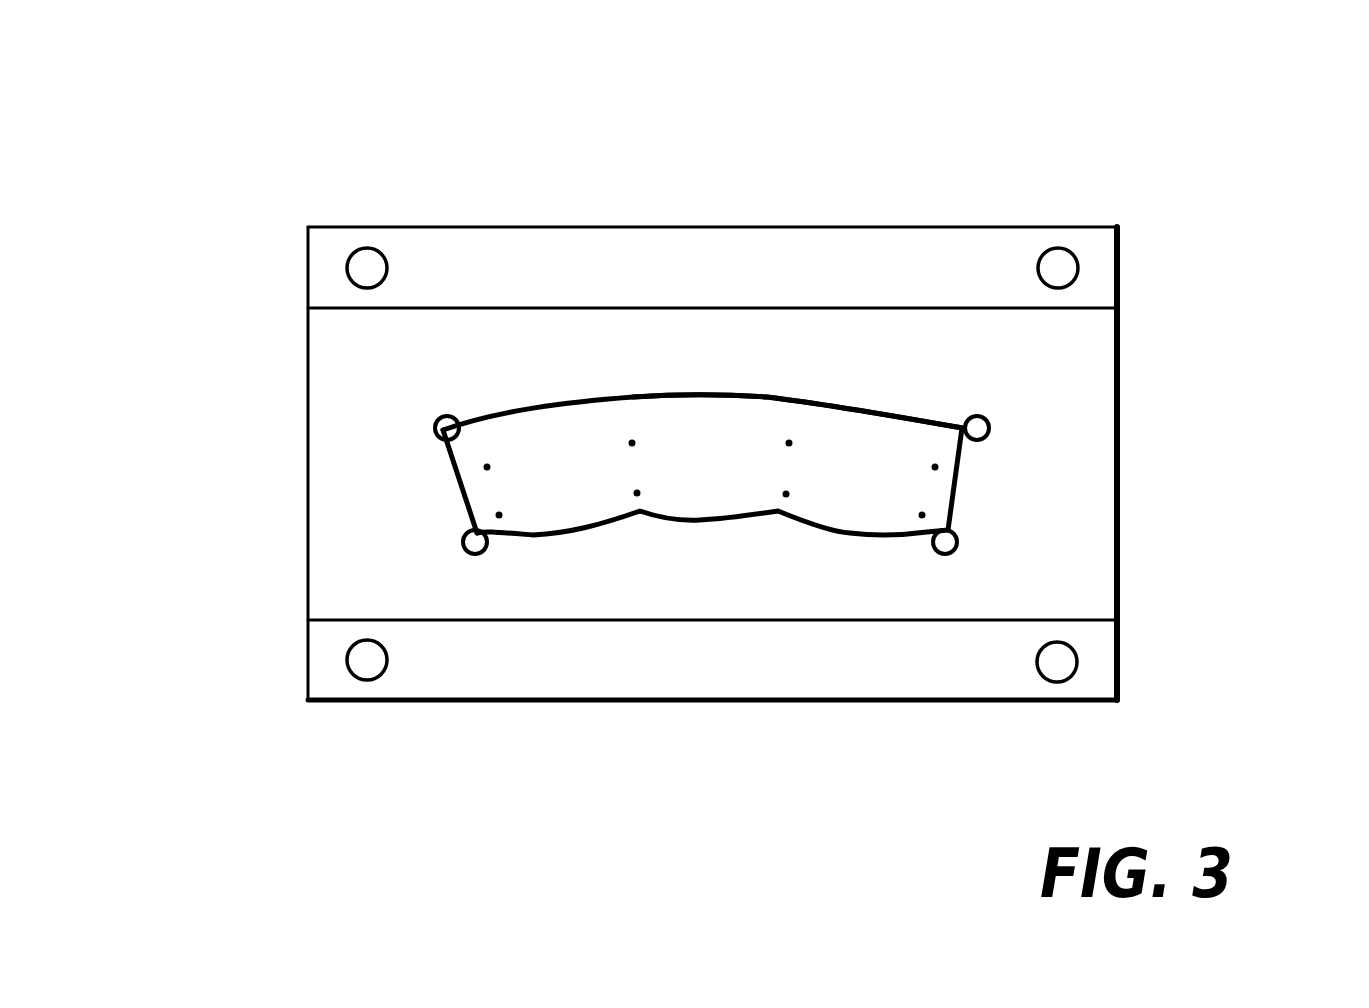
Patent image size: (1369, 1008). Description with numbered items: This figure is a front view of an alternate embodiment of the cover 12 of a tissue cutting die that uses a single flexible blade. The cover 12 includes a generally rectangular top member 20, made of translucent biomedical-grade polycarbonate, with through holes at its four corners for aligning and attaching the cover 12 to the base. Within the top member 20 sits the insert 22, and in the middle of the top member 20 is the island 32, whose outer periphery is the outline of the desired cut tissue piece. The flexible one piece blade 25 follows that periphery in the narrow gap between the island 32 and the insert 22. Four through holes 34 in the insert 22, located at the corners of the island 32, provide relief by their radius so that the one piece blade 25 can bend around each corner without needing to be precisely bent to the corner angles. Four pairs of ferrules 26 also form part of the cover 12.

The cover 12 is at (1183, 183).
The top member 20 is at (857, 275).
The insert 22 is at (380, 385).
The one piece blade 25 is at (900, 410).
The ferrules 26 is at (637, 493).
The island 32 is at (853, 498).
The through holes 34 is at (465, 541).